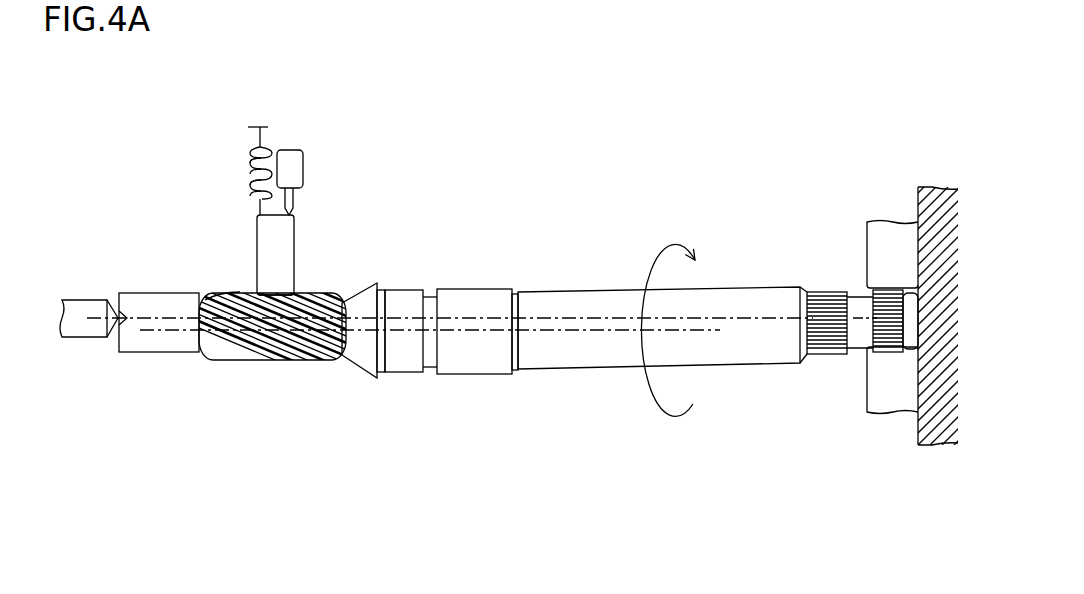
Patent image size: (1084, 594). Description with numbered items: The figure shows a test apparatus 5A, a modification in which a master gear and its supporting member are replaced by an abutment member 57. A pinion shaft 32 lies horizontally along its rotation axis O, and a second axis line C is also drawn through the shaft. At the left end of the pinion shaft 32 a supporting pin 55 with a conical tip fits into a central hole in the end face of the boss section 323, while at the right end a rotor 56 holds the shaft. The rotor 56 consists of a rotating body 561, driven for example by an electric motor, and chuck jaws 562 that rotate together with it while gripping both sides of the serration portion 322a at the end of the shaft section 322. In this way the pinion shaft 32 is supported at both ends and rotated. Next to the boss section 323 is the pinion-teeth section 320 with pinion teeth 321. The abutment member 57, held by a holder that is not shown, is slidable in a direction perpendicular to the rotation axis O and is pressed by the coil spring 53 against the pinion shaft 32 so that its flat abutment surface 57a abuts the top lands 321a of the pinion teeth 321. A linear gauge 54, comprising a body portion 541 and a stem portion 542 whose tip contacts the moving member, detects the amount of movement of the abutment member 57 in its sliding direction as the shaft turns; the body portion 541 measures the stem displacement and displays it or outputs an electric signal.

The test apparatus 5A is at (135, 158).
The pinion shaft 32 is at (630, 329).
The pinion-teeth section 320 is at (319, 335).
The pinion teeth 321 is at (317, 348).
The top lands 321a is at (228, 290).
The shaft body portion 322 is at (542, 302).
The serration portion 322a is at (875, 288).
The boss section 323 is at (177, 343).
The coil spring 53 is at (257, 162).
The linear gauge 54 is at (344, 170).
The body portion 541 is at (305, 158).
The stem portion 542 is at (295, 202).
The supporting pin 55 is at (83, 292).
The rotor 56 is at (869, 308).
The rotating body 561 is at (917, 432).
The chuck jaws 562 is at (877, 237).
The abutment member 57 is at (311, 255).
The abutment surface 57a is at (295, 295).
The rotation axis O is at (473, 318).
The shaft axis C is at (477, 330).